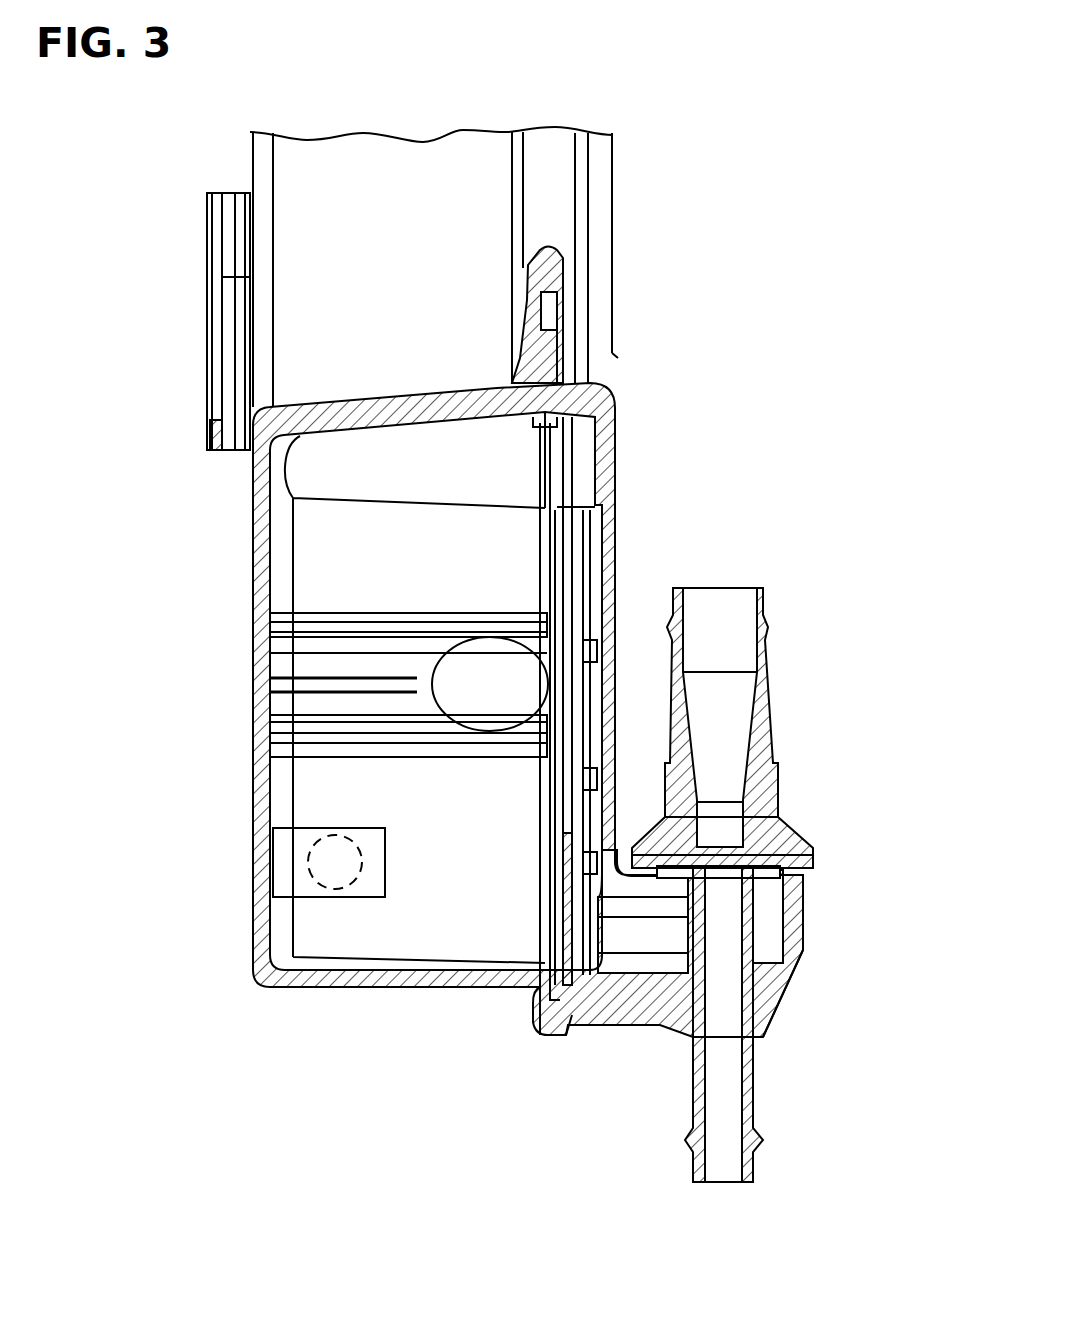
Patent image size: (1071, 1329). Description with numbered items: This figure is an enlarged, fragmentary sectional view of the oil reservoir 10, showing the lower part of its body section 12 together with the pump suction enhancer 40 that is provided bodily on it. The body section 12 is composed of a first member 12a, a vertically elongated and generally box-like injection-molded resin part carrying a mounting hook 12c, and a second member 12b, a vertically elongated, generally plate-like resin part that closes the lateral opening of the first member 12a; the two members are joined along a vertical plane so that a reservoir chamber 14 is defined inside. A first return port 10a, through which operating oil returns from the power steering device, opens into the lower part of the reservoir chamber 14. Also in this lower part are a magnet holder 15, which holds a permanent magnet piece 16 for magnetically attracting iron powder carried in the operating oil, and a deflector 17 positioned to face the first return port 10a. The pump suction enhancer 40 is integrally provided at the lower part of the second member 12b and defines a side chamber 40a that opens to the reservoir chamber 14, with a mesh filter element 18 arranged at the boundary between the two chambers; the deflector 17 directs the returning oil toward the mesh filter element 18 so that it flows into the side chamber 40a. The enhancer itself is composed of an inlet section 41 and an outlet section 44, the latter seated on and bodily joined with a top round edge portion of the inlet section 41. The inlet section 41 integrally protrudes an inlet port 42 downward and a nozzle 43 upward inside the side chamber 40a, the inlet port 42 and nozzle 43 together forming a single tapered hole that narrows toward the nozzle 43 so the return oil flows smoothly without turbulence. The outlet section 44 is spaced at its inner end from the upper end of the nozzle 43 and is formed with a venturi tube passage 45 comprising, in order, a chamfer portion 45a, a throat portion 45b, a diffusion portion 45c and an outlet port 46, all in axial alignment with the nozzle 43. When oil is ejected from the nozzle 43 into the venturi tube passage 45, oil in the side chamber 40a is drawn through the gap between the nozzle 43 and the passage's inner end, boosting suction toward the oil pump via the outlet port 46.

The oil reservoir 10 is at (668, 357).
The first return port 10a is at (315, 872).
The body section 12 is at (246, 536).
The first member 12a is at (290, 189).
The second member 12b is at (603, 203).
The mounting hook 12c is at (213, 330).
The reservoir chamber 14 is at (447, 913).
The magnet holder 15 is at (290, 643).
The permanent magnet piece 16 is at (475, 683).
The deflector 17 is at (290, 843).
The mesh filter element 18 is at (553, 900).
The pump suction enhancer 40 is at (825, 914).
The side chamber 40a is at (632, 940).
The inlet section 41 is at (763, 1010).
The inlet port 42 is at (708, 1142).
The nozzle 43 is at (723, 887).
The outlet section 44 is at (722, 810).
The venturi tube passage 45 is at (725, 692).
The chamfer portion 45a is at (737, 848).
The throat portion 45b is at (740, 788).
The diffusion portion 45c is at (727, 735).
The outlet port 46 is at (715, 612).